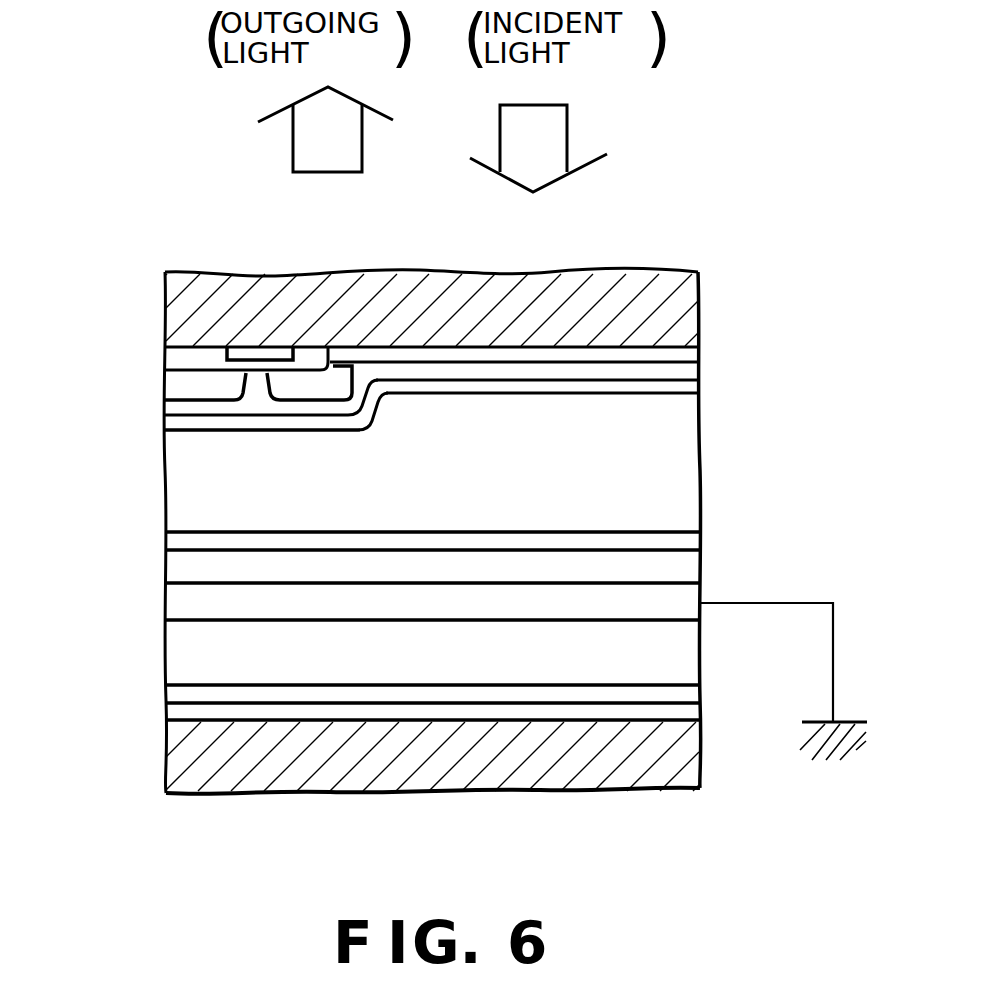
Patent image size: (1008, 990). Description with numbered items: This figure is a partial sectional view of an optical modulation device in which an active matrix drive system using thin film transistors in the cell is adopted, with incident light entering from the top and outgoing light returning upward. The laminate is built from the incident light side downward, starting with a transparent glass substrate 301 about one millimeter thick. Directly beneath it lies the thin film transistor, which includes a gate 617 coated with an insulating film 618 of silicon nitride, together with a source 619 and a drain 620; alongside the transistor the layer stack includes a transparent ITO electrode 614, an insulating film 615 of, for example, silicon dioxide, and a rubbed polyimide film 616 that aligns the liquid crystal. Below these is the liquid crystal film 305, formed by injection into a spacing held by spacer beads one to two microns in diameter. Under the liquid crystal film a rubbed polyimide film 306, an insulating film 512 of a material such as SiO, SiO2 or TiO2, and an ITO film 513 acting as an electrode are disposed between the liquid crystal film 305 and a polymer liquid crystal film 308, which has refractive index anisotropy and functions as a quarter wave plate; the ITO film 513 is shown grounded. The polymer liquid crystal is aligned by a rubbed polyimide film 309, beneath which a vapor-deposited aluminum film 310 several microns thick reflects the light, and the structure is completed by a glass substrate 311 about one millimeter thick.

The transparent glass substrate 301 is at (177, 320).
The liquid crystal film 305 is at (177, 480).
The rubbed polyimide film 306 is at (170, 542).
The polymer liquid crystal film 308 is at (173, 653).
The rubbed polyimide film 309 is at (170, 693).
The vapor-deposited aluminum film 310 is at (163, 713).
The glass substrate 311 is at (173, 765).
The insulating film 512 is at (173, 568).
The ITO film 513 is at (173, 607).
The transparent ITO electrode 614 is at (703, 350).
The insulating film 615 is at (703, 377).
The rubbed polyimide film 616 is at (703, 387).
The gate 617 is at (263, 352).
The insulating film 618 is at (177, 360).
The source 619 is at (177, 388).
The drain 620 is at (307, 388).